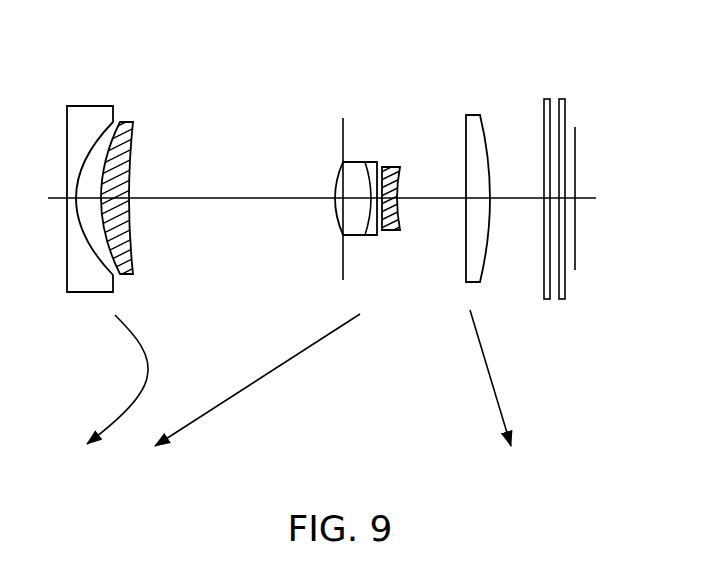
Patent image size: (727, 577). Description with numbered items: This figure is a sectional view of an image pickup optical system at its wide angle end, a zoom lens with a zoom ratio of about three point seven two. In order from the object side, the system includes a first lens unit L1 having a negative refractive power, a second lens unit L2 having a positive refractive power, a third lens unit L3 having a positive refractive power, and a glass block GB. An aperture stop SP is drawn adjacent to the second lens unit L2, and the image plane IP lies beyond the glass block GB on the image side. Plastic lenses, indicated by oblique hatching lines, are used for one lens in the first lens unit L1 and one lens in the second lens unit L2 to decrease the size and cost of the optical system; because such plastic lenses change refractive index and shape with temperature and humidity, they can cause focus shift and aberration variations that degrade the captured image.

The first lens unit L1 is at (63, 88).
The second lens unit L2 is at (337, 88).
The third lens unit L3 is at (505, 88).
The aperture stop SP is at (343, 124).
The glass block GB is at (534, 90).
The image plane IP is at (575, 138).